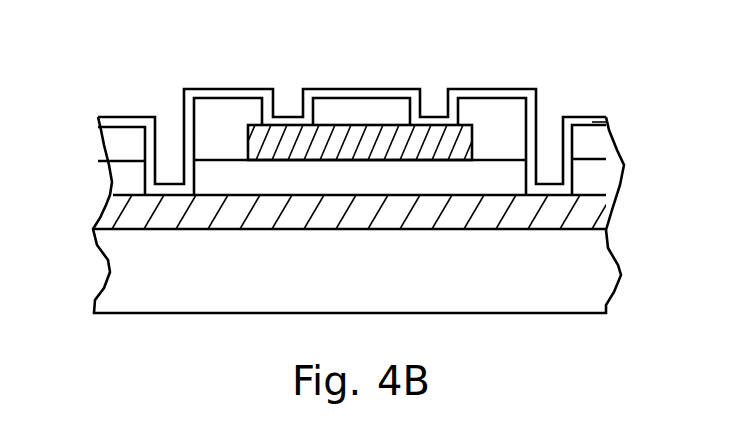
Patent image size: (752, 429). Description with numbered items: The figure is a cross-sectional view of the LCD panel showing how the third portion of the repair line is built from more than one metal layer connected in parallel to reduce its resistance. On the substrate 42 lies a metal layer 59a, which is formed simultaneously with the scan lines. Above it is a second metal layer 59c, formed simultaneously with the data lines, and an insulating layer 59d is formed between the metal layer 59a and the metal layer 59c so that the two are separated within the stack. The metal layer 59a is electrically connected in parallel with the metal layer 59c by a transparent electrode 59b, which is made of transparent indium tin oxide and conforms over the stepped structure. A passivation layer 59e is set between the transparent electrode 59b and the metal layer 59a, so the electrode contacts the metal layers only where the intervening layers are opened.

The substrate 42 is at (602, 270).
The metal layer 59a is at (597, 210).
The transparent electrode 59b is at (592, 122).
The metal layer 59c is at (291, 132).
The insulating layer 59d is at (130, 173).
The passivation layer 59e is at (225, 108).